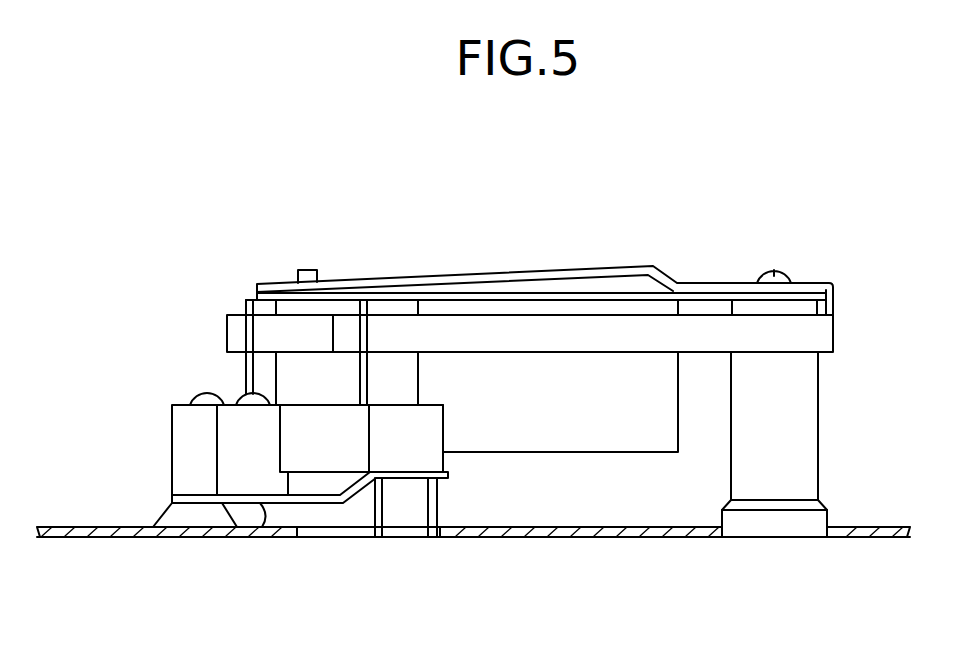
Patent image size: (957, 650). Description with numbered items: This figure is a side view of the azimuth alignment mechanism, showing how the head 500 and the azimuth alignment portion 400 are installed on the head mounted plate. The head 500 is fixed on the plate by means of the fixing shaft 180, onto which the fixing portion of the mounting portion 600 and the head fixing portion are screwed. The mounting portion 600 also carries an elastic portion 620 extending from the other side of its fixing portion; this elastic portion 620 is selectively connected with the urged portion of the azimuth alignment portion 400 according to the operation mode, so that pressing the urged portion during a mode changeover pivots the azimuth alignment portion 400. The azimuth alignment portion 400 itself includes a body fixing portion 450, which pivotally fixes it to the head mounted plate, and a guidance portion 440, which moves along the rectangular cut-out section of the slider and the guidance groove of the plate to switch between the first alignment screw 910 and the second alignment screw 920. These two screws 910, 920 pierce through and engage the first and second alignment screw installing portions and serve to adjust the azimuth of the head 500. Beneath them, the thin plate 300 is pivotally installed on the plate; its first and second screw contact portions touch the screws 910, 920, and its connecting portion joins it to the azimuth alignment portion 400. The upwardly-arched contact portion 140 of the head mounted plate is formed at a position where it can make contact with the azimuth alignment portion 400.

The contact portion 140 is at (197, 517).
The fixing shaft 180 is at (818, 420).
The thin plate 300 is at (265, 515).
The azimuth alignment portion 400 is at (172, 438).
The guidance portion 440 is at (402, 515).
The body fixing portion 450 is at (412, 380).
The head 500 is at (601, 432).
The mounting portion 600 is at (832, 288).
The elastic portion 620 is at (625, 330).
The first alignment screw 910 is at (200, 394).
The second alignment screw 920 is at (240, 394).